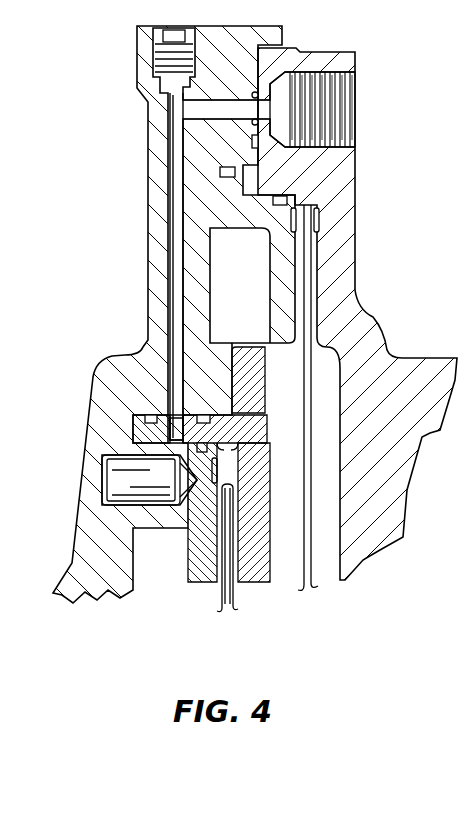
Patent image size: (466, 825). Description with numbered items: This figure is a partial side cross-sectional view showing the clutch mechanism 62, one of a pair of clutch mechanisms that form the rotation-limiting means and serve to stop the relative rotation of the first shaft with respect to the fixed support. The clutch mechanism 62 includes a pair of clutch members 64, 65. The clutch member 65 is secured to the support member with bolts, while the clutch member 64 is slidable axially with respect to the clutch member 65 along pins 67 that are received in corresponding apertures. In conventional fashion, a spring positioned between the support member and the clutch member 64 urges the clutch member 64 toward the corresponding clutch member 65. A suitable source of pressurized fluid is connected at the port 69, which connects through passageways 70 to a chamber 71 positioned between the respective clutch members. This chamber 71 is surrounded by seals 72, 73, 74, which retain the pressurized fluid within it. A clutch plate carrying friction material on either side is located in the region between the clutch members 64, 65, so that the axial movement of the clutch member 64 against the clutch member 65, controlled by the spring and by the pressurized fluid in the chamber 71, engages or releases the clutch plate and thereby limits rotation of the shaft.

The clutch mechanism 62 is at (90, 334).
The clutch member 64 is at (197, 585).
The clutch member 65 is at (255, 585).
The pin 67 is at (112, 473).
The port 69 is at (328, 97).
The passageway 70 is at (172, 172).
The chamber 71 is at (176, 430).
The seal 72 is at (200, 440).
The seal 73 is at (208, 412).
The seal 74 is at (148, 413).